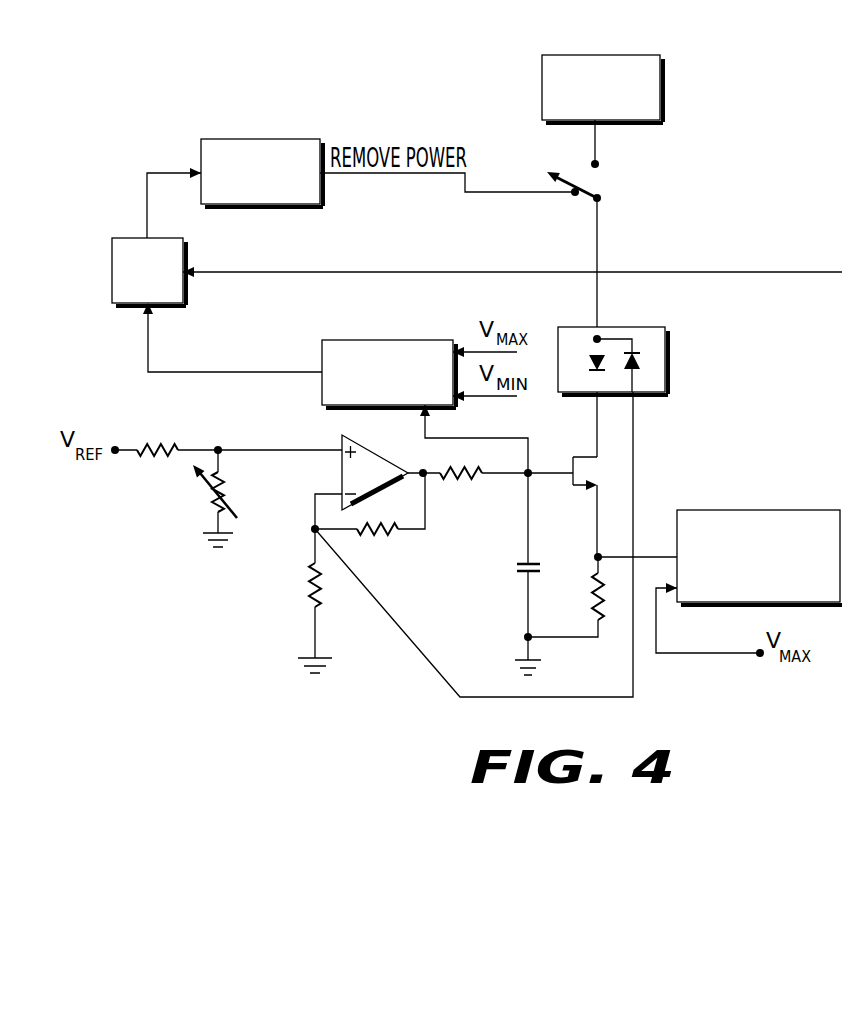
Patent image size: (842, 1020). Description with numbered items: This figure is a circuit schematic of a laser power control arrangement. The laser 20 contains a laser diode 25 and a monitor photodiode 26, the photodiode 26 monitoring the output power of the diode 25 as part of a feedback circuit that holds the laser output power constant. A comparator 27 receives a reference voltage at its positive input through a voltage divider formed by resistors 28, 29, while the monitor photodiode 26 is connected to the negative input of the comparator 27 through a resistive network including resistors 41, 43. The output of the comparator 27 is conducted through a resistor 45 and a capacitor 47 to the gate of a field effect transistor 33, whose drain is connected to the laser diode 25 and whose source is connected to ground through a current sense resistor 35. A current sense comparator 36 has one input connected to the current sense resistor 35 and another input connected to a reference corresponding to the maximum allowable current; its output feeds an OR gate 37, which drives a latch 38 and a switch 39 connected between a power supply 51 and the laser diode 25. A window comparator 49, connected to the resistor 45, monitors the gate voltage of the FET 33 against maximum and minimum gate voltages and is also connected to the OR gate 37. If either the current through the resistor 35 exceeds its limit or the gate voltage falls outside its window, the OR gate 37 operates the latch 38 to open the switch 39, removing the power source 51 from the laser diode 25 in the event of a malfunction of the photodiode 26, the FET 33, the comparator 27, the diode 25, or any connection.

The laser 20 is at (647, 327).
The laser diode 25 is at (592, 360).
The monitor photodiode 26 is at (637, 372).
The comparator 27 is at (342, 473).
The resistor 28 is at (155, 443).
The resistor 29 is at (207, 486).
The field effect transistor (FET) 33 is at (574, 481).
The current sense resistor 35 is at (585, 604).
The current sense comparator 36 is at (758, 510).
The OR gate 37 is at (132, 237).
The latch 38 is at (260, 139).
The switch 39 is at (575, 197).
The resistor 41 is at (307, 594).
The resistor 43 is at (388, 532).
The resistor 45 is at (462, 480).
The capacitor 47 is at (520, 584).
The window comparator 49 is at (387, 340).
The power supply 51 is at (660, 92).